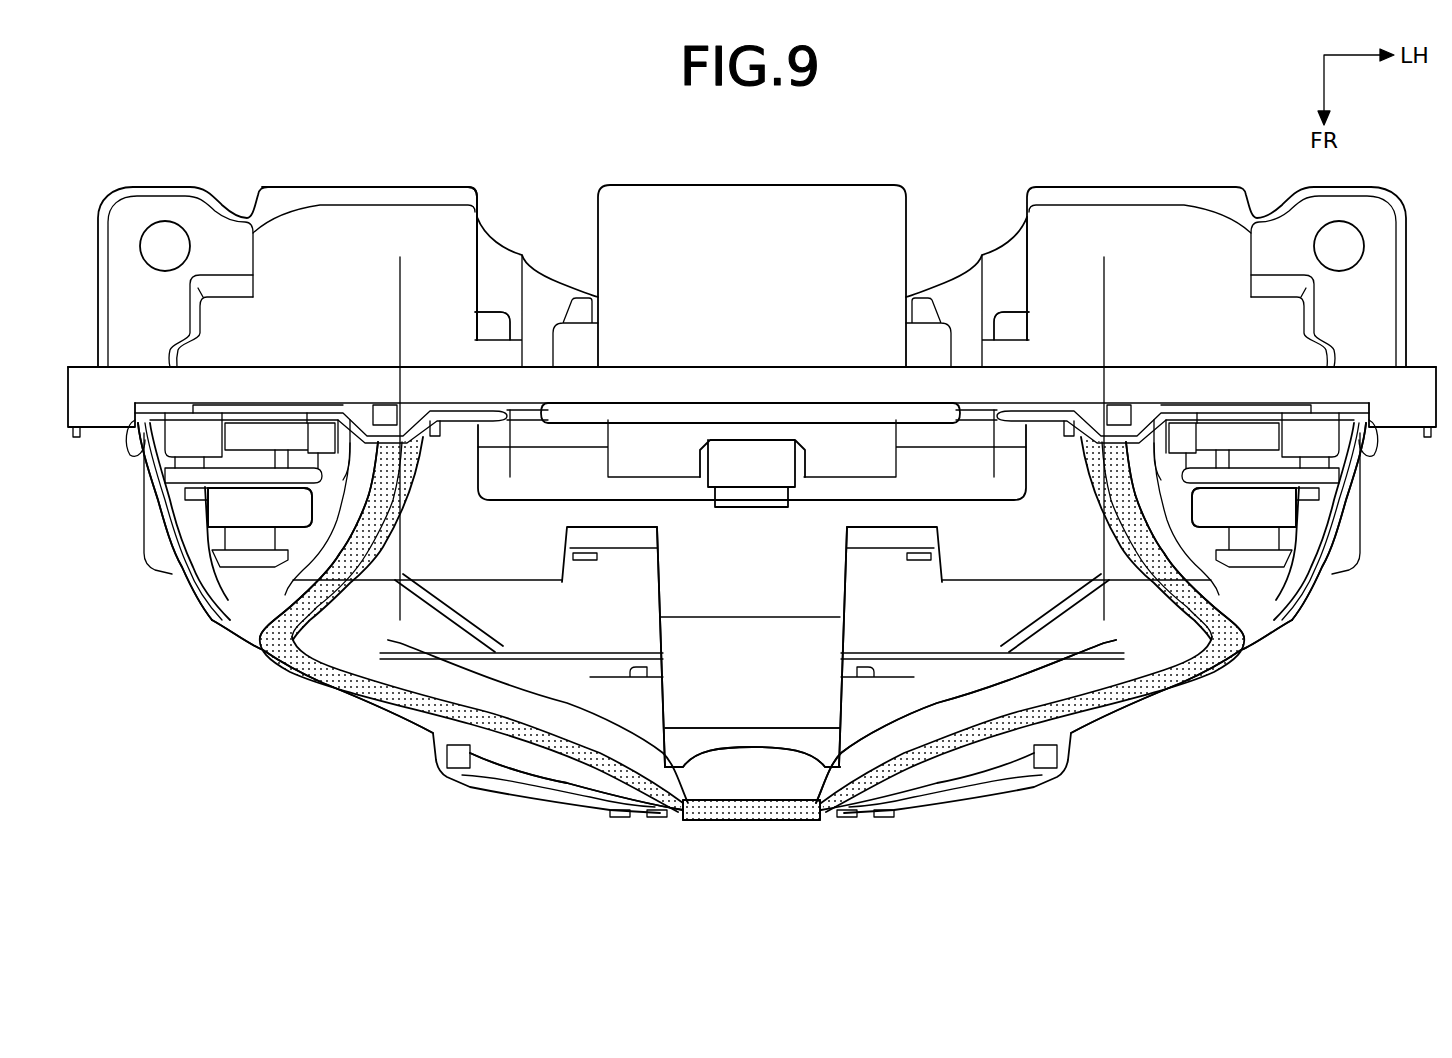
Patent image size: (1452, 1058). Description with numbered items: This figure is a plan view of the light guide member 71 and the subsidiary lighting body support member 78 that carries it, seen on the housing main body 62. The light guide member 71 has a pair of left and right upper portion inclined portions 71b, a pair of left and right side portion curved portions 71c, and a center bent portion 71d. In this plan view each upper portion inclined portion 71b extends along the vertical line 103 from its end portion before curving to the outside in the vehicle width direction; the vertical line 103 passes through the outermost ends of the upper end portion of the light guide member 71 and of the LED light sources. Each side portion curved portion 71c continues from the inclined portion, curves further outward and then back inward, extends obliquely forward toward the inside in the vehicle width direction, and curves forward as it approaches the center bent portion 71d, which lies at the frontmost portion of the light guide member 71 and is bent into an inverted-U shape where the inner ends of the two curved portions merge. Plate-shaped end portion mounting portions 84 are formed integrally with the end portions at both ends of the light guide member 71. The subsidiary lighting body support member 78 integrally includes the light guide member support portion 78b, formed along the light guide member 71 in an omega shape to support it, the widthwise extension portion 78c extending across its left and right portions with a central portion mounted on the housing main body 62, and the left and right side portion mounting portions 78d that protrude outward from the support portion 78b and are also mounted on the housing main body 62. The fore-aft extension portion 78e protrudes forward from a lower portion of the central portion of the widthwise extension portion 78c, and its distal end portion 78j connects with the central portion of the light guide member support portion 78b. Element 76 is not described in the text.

The housing main body 62 is at (348, 230).
The end portion mounting portion 84 is at (482, 447).
The widthwise extension portion 78c is at (636, 517).
The control unit 76 is at (838, 440).
The side portion mounting portion 78d is at (350, 513).
The upper portion inclined portion 71b is at (350, 515).
The side portion curved portion 71c is at (325, 683).
The vertical line 103 is at (400, 605).
The light guide member 71 is at (505, 745).
The subsidiary lighting body support member 78 is at (718, 812).
The center bent portion 71d is at (748, 815).
The distal end portion 78j is at (803, 742).
The fore-aft extension portion 78e is at (818, 693).
The light guide member support portion 78b is at (1002, 700).